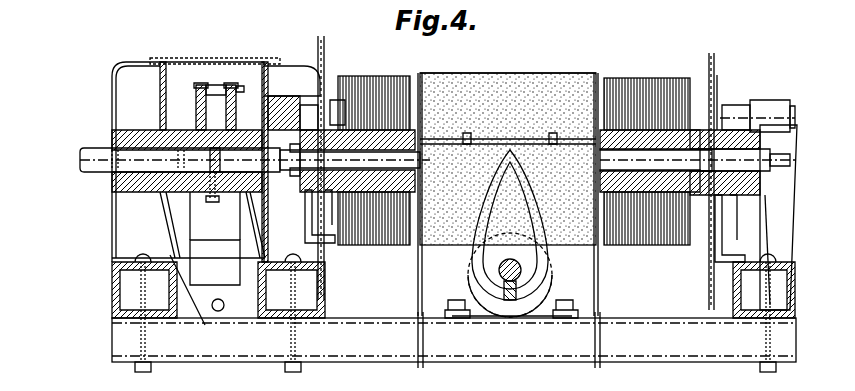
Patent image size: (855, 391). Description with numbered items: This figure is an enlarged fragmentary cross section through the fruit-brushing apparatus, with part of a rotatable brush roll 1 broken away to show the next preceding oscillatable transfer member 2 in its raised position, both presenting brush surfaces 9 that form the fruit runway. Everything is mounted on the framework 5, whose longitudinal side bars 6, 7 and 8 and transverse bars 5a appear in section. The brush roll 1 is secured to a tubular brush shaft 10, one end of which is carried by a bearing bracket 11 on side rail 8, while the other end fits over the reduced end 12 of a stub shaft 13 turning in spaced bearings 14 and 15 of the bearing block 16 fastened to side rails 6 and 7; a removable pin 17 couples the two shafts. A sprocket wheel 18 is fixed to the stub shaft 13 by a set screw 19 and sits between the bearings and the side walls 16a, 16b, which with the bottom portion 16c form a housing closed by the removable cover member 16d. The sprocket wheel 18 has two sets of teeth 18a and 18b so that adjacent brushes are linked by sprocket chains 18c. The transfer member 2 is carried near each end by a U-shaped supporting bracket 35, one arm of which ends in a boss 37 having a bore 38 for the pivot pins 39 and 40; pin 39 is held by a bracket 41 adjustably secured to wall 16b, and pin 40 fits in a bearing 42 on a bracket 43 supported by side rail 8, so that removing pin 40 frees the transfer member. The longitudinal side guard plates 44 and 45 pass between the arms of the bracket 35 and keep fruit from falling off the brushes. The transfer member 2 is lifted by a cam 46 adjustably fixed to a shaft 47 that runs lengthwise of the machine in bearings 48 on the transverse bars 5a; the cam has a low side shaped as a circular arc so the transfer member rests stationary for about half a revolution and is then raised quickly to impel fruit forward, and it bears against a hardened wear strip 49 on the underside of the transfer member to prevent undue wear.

The brush roll 1 is at (378, 245).
The transfer member 2 is at (510, 80).
The framework 5 is at (105, 351).
The transverse bar 5a is at (375, 345).
The side bar 6 is at (112, 305).
The side bar 7 is at (322, 302).
The side bar 8 is at (733, 295).
The brush surface 9 is at (485, 69).
The tubular brush shaft 10 is at (690, 200).
The bearing bracket 11 is at (786, 150).
The reduced end 12 is at (290, 172).
The stub shaft 13 is at (101, 150).
The bearing 14 is at (190, 180).
The bearing 15 is at (252, 186).
The bearing block 16 is at (160, 186).
The side wall 16a is at (163, 90).
The side wall 16b is at (272, 100).
The bottom portion 16c is at (197, 77).
The cover member 16d is at (272, 56).
The pin 17 is at (275, 156).
The sprocket wheel 18 is at (215, 100).
The set of teeth 18a is at (203, 85).
The set of teeth 18b is at (238, 85).
The sprocket chain 18c is at (238, 90).
The set screw 19 is at (213, 202).
The U-shaped supporting bracket 35 is at (312, 238).
The boss 37 is at (316, 106).
The bore 38 is at (718, 106).
The pivot pin 39 is at (344, 102).
The pivot pin 40 is at (792, 116).
The bracket 41 is at (280, 116).
The bearing 42 is at (770, 106).
The bracket 43 is at (787, 194).
The side guard plate 44 is at (324, 56).
The side guard plate 45 is at (709, 68).
The cam 46 is at (478, 270).
The shaft 47 is at (522, 268).
The bearing 48 is at (575, 302).
The wear strip 49 is at (465, 145).